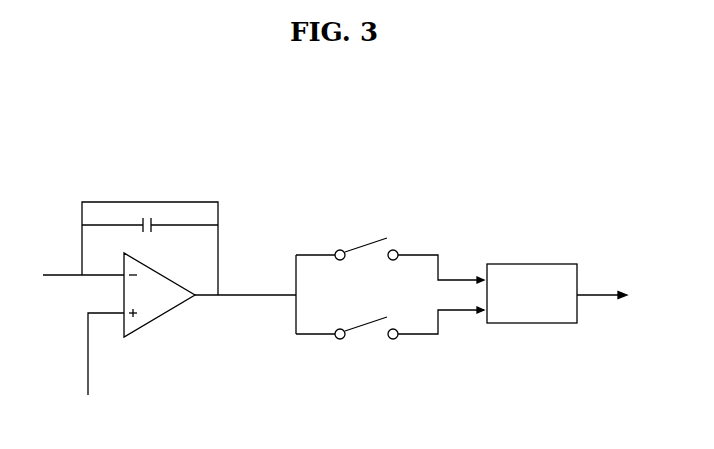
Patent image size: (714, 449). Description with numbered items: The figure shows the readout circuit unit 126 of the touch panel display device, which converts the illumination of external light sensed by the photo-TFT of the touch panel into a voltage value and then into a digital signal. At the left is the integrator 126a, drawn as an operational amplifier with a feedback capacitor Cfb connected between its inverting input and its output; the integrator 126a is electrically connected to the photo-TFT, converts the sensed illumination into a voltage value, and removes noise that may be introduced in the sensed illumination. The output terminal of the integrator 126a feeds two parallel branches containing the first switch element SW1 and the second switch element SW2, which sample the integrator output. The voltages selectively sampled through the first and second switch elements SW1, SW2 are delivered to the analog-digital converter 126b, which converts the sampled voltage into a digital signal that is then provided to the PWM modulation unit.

The readout circuit unit 126 is at (355, 178).
The integrator 126a is at (160, 317).
The analog-digital converter (ADC) 126b is at (523, 264).
The feedback capacitor Cfb is at (150, 248).
The first switch element SW1 is at (390, 250).
The second switch element SW2 is at (390, 320).